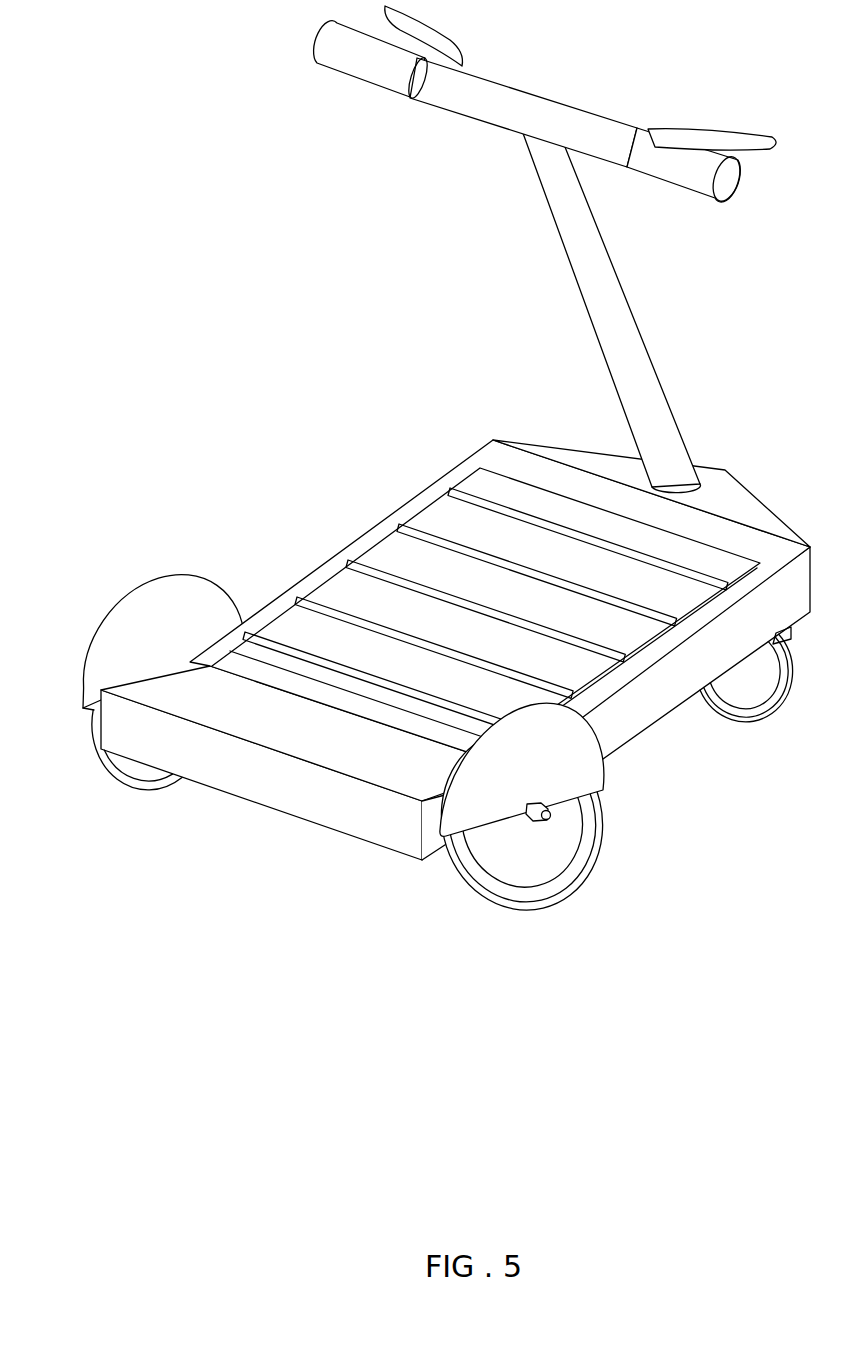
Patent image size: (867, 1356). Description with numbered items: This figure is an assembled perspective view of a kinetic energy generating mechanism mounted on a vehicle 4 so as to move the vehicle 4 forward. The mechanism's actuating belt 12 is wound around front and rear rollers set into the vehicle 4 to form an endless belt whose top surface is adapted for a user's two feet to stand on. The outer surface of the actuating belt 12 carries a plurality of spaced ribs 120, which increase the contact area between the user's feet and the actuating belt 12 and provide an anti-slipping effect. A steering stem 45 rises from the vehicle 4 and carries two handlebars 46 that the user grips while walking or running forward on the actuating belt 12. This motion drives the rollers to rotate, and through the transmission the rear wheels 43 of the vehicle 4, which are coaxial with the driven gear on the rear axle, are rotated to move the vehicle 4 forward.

The vehicle 4 is at (338, 509).
The actuating belt 12 is at (458, 527).
The spaced ribs 120 is at (300, 601).
The rear wheels 43 is at (127, 772).
The steering stem 45 is at (627, 349).
The handlebars 46 is at (367, 60).